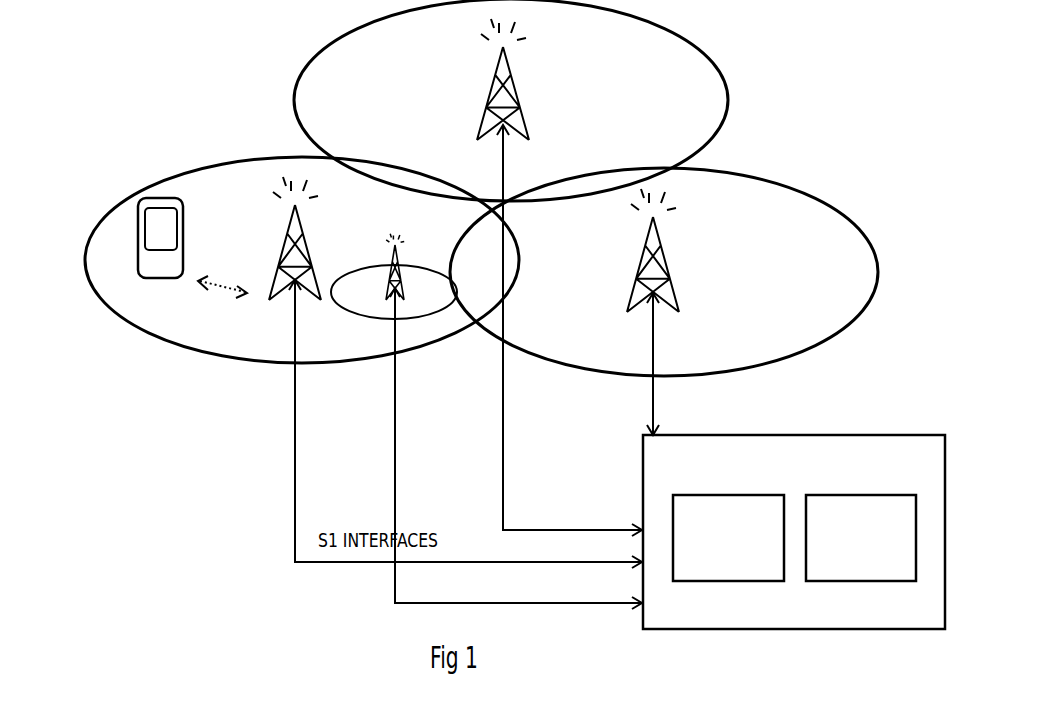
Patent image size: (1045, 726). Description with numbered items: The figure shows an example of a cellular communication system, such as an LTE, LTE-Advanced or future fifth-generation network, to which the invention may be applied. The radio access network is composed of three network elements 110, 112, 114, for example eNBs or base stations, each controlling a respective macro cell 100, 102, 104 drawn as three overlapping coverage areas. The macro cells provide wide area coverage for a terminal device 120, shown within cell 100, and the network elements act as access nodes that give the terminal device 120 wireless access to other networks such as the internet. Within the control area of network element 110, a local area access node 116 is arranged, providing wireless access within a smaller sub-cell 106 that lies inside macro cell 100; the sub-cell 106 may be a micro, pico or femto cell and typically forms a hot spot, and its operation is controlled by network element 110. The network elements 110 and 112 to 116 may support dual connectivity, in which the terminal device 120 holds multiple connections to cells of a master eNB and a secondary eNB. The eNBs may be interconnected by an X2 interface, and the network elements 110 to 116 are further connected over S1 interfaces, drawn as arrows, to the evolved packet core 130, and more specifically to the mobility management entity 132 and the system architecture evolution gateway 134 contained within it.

The cell 100 is at (242, 158).
The cell 102 is at (690, 52).
The cell 104 is at (840, 222).
The sub-cell 106 is at (356, 270).
The network element 110 is at (285, 235).
The network element 112 is at (497, 76).
The network element 114 is at (645, 246).
The local area access node 116 is at (392, 246).
The terminal device 120 is at (136, 228).
The evolved packet core 130 is at (794, 532).
The mobility management entity 132 is at (728, 538).
The system architecture evolution gateway 134 is at (861, 538).